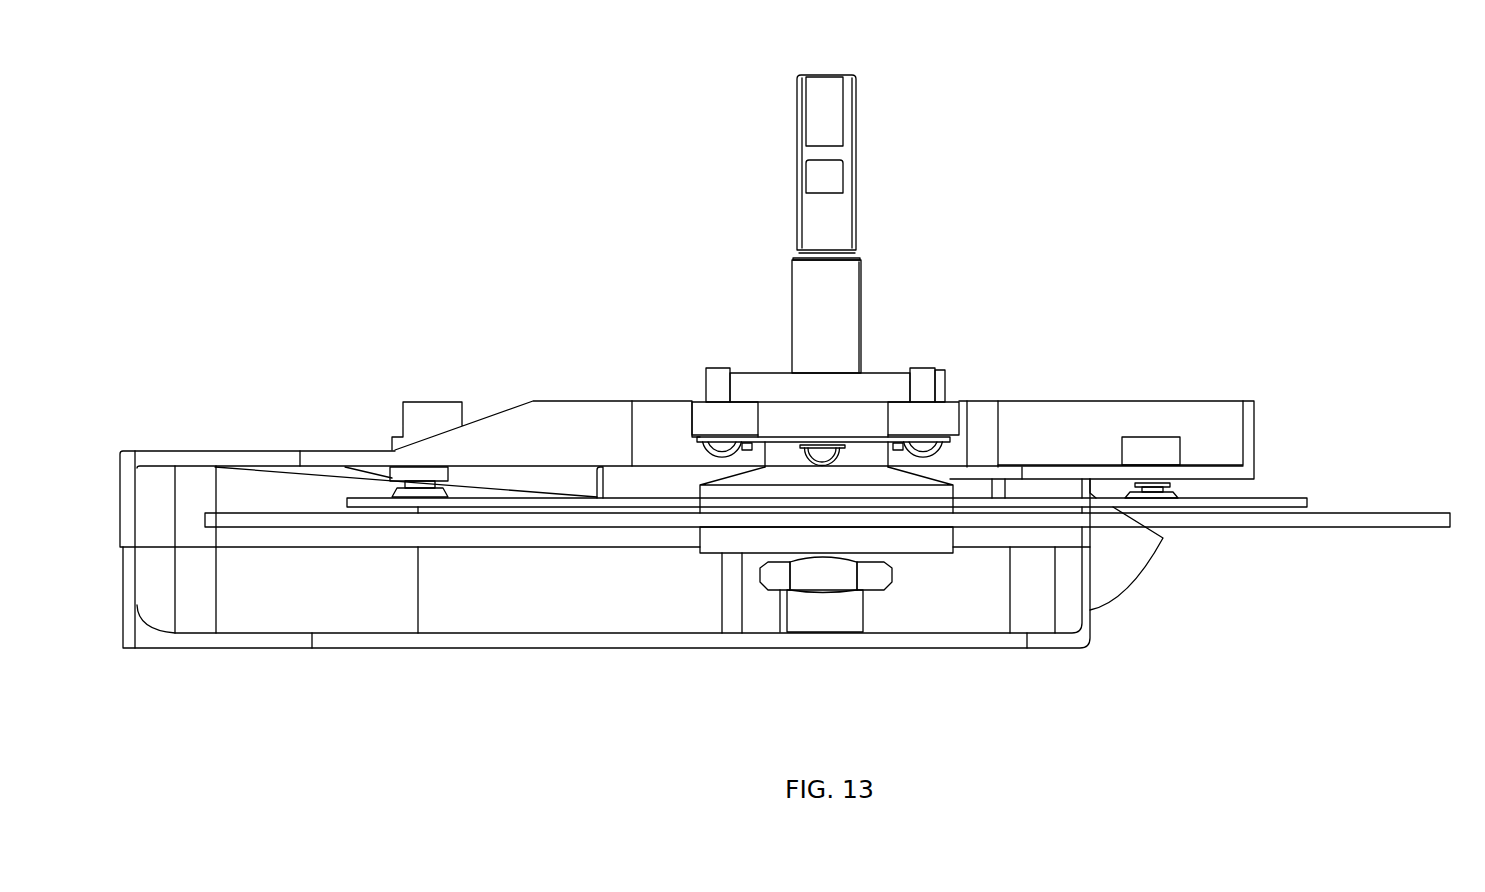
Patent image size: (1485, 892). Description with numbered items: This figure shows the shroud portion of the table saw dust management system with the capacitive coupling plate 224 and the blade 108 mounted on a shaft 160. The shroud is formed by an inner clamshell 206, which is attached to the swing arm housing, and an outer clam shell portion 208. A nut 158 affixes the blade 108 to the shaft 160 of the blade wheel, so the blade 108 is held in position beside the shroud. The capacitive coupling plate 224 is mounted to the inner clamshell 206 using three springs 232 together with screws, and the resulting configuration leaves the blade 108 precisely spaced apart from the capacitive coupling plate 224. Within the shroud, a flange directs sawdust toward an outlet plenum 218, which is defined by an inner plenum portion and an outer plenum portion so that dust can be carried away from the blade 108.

The blade 108 is at (1347, 513).
The nut 158 is at (762, 580).
The shaft 160 is at (858, 610).
The inner clamshell 206 is at (533, 400).
The outer clam shell portion 208 is at (528, 648).
The outlet plenum 218 is at (1165, 540).
The capacitive coupling plate 224 is at (1300, 498).
The springs 232 is at (397, 487).